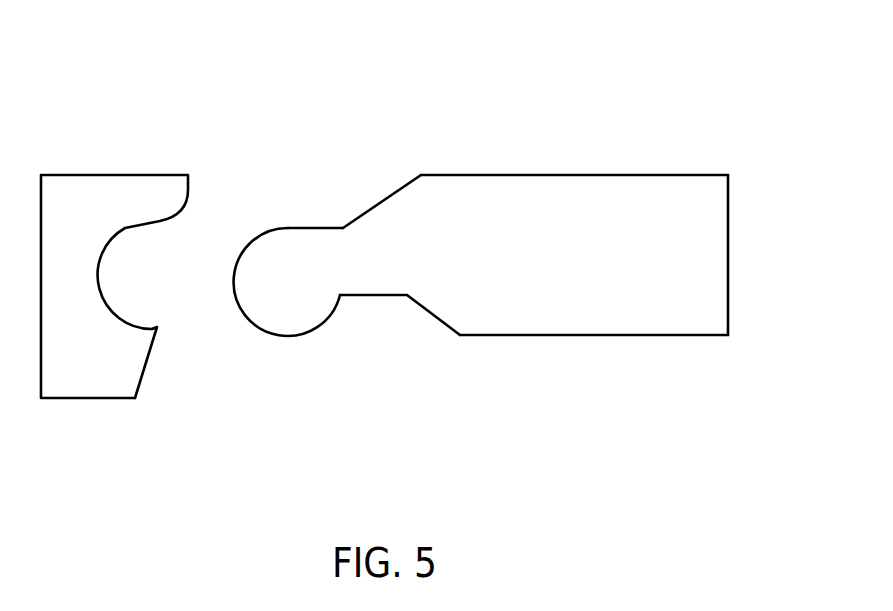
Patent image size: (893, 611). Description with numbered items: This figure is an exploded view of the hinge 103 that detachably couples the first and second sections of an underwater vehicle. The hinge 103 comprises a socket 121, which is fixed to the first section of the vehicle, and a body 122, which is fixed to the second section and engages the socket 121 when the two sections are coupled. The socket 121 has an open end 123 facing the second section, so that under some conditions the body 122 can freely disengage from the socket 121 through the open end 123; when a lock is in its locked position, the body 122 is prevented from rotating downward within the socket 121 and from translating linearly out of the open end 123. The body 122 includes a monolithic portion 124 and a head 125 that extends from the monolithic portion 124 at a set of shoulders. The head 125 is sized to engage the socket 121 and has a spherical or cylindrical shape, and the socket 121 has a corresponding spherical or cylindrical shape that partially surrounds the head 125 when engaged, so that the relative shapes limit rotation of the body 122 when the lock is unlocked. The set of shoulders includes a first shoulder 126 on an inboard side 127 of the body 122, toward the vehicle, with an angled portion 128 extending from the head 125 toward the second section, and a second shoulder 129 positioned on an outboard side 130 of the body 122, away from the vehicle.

The hinge 103 is at (727, 435).
The socket 121 is at (137, 147).
The body 122 is at (481, 232).
The open end 123 is at (157, 327).
The monolithic portion 124 is at (708, 255).
The head 125 is at (243, 285).
The first shoulder 126 is at (371, 207).
The inboard side 127 is at (630, 175).
The angled portion 128 is at (364, 210).
The second shoulder 129 is at (373, 295).
The outboard side 130 is at (613, 335).